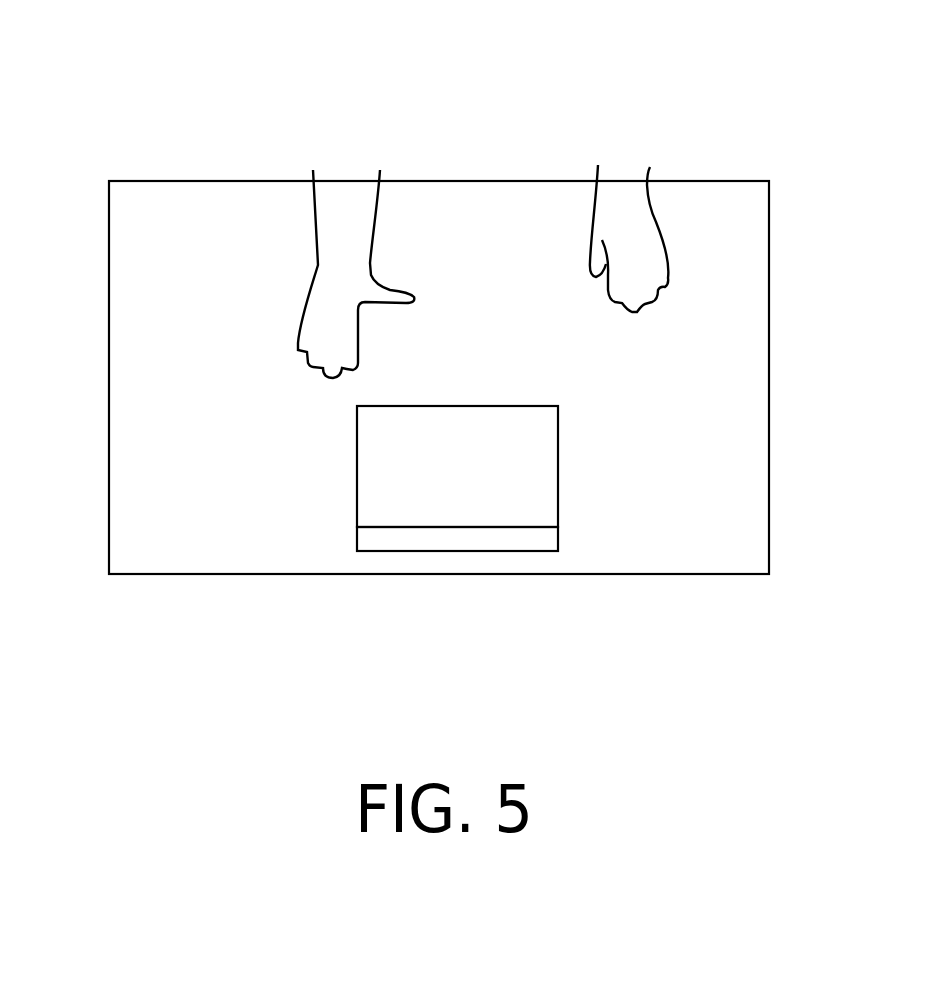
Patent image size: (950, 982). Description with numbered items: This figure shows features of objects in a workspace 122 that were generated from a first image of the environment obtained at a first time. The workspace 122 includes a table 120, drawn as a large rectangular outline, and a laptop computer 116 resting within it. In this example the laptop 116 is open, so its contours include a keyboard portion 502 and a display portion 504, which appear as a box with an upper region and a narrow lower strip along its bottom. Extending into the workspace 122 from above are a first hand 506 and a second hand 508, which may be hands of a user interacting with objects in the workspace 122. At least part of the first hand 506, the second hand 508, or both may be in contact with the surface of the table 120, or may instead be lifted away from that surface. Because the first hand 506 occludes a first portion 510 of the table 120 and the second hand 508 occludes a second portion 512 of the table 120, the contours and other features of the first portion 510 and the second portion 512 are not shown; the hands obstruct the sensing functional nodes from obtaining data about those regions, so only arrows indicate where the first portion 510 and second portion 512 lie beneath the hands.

The laptop computer 116 is at (476, 551).
The table 120 is at (108, 378).
The workspace 122 is at (198, 116).
The keyboard portion 502 is at (357, 467).
The display portion 504 is at (357, 540).
The first hand 506 is at (372, 232).
The second hand 508 is at (660, 223).
The first portion 510 is at (362, 158).
The second portion 512 is at (631, 159).